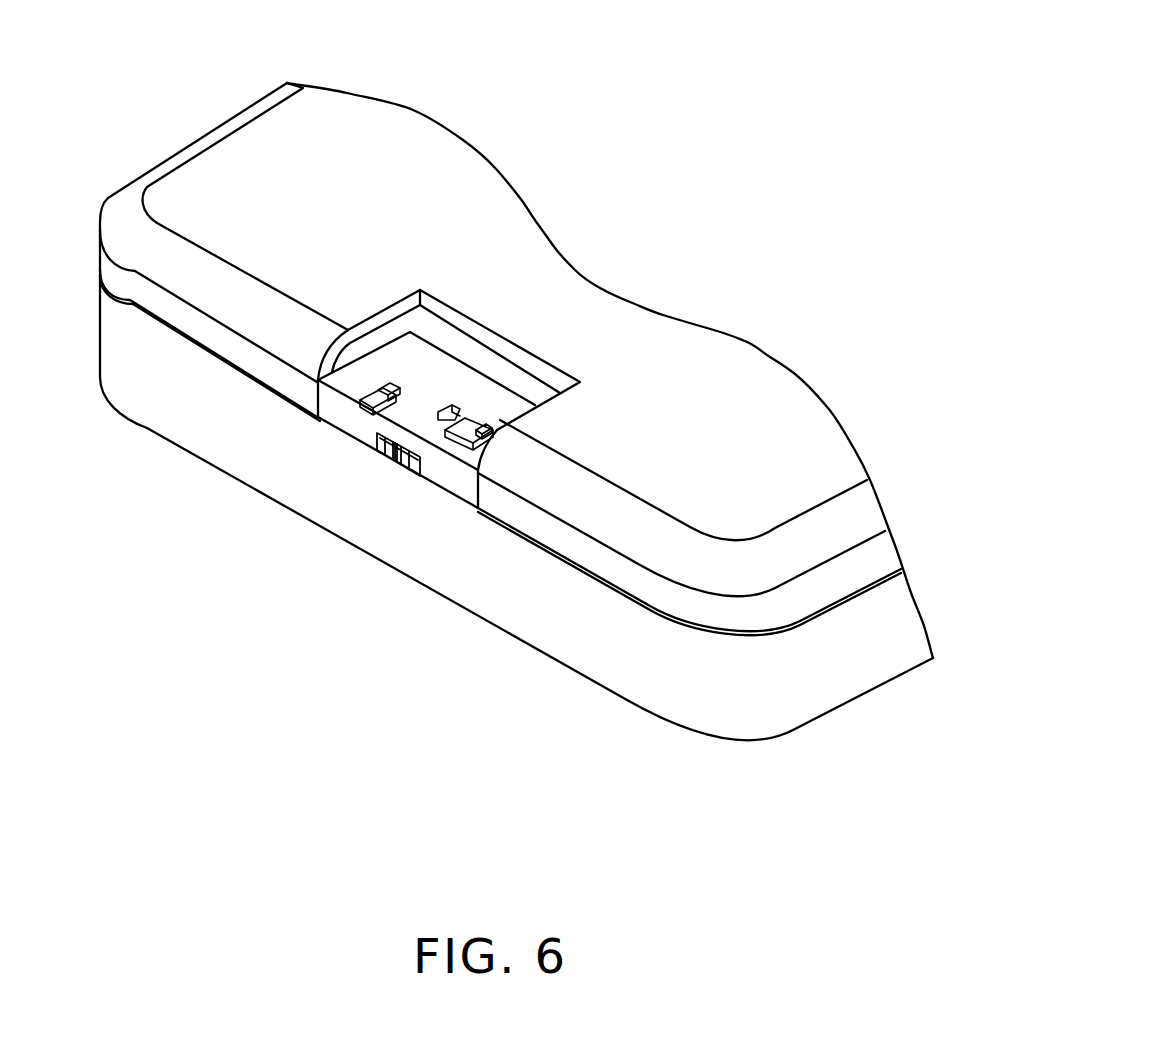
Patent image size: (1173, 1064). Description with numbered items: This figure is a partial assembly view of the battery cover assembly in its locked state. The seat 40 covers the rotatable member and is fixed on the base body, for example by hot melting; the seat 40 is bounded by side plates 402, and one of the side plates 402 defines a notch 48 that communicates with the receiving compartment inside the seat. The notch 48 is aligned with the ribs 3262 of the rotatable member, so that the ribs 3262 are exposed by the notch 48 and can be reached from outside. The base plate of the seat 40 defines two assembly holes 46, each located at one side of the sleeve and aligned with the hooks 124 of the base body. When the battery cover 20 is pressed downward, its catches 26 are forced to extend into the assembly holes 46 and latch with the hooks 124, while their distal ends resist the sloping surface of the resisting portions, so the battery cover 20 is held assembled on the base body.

The battery cover 20 is at (367, 123).
The seat 40 is at (433, 363).
The side plates 402 is at (453, 487).
The assembly holes 46 is at (390, 380).
The catches 26 is at (463, 410).
The hooks 124 is at (482, 447).
The notch 48 is at (375, 440).
The ribs 3262 is at (395, 463).